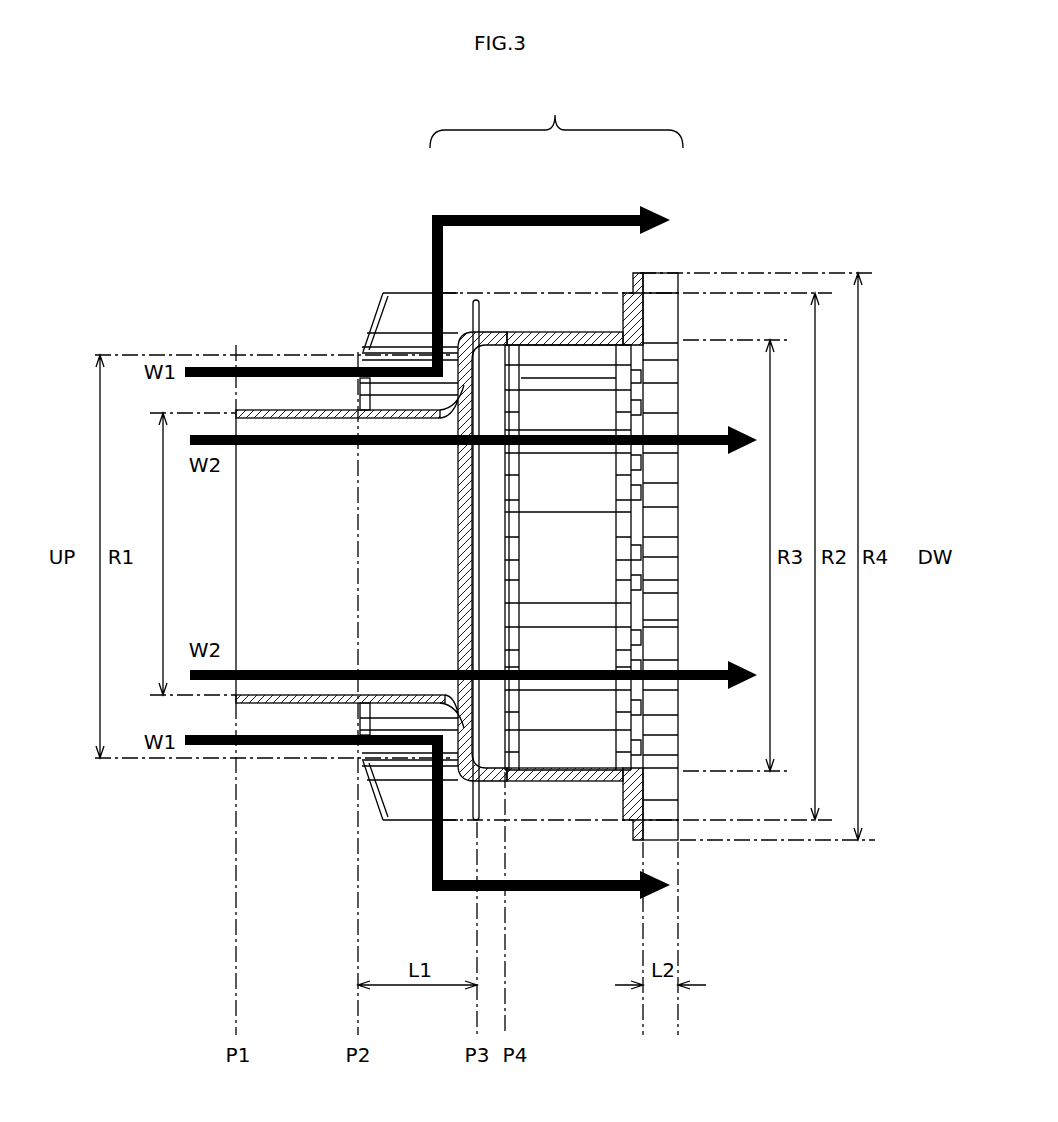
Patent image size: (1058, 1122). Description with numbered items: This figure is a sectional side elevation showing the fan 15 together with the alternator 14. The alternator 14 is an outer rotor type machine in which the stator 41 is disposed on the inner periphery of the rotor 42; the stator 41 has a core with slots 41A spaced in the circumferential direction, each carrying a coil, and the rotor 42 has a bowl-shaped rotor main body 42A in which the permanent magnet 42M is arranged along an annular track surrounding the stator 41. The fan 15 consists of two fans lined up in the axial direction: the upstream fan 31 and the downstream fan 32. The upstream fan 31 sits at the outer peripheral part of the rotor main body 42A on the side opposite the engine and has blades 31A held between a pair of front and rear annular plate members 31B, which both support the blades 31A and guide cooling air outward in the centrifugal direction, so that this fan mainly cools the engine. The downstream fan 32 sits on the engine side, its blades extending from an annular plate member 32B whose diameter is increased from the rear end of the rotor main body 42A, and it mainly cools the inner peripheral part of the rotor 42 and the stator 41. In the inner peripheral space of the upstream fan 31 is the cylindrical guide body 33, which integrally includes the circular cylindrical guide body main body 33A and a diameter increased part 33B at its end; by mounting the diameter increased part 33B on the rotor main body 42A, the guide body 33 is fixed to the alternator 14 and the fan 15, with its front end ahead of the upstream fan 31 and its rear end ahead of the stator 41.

The fan 15 is at (524, 463).
The upstream fan 31 is at (524, 480).
The downstream fan 32 is at (641, 490).
The blades 31A is at (402, 312).
The annular plate members 31B is at (368, 318).
The cylindrical guide body 33 is at (336, 524).
The guide body main body 33A is at (322, 408).
The diameter increased part 33B is at (370, 352).
The alternator 14 is at (372, 455).
The rotor 42 is at (494, 518).
The rotor main body 42A is at (458, 621).
The permanent magnet 42M is at (522, 338).
The stator 41 is at (510, 499).
The slots 41A is at (573, 383).
The annular plate member 32B is at (640, 280).